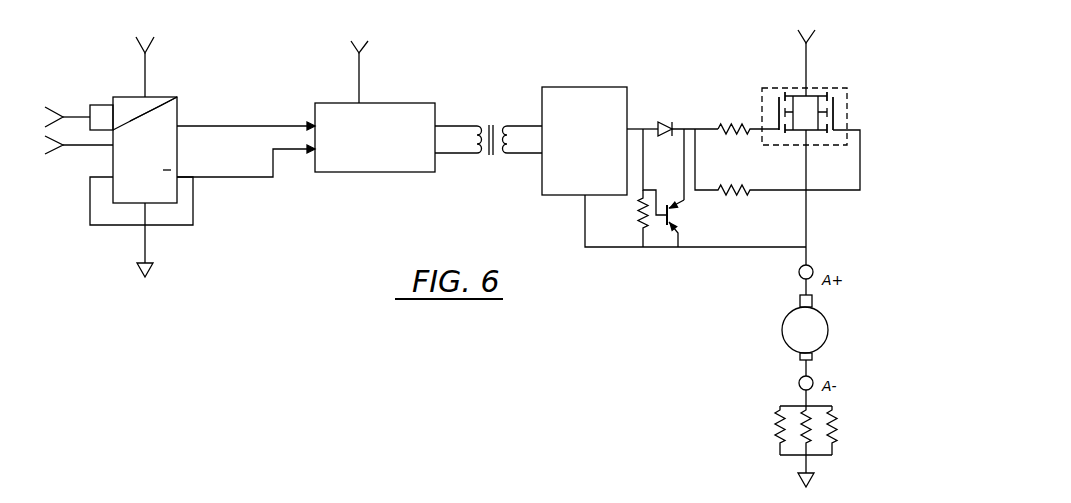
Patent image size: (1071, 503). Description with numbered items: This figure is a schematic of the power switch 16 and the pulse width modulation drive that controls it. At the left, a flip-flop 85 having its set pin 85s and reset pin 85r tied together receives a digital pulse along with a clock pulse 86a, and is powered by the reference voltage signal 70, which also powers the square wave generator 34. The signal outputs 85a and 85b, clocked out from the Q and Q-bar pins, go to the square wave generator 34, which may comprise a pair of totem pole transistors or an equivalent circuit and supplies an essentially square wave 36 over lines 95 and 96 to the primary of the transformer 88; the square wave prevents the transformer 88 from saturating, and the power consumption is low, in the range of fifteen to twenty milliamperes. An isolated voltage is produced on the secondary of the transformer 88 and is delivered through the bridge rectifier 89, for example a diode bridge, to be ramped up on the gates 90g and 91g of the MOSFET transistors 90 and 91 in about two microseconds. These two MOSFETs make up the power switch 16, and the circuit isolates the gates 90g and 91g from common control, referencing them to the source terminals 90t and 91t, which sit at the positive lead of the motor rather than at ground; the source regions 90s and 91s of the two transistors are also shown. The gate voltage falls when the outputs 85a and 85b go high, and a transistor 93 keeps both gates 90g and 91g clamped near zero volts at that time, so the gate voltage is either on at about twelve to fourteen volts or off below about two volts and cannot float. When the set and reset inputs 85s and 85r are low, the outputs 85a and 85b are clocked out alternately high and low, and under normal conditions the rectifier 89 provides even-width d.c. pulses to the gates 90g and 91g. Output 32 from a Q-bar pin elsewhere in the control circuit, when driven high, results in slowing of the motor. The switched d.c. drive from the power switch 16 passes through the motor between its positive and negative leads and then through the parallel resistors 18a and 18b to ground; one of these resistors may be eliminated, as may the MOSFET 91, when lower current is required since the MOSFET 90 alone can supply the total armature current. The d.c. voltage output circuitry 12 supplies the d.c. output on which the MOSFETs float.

The d.c. voltage output circuitry 12 is at (813, 43).
The power switch 16 is at (860, 150).
The resistor 18a is at (780, 422).
The resistor 18b is at (837, 423).
The output 32 is at (63, 113).
The square wave generator 34 is at (348, 173).
The square waves 36 is at (521, 125).
The reference voltage signal 70 is at (152, 50).
The flip-flop 85 is at (118, 96).
The set pin 85s is at (150, 97).
The reset pin 85r is at (177, 99).
The signal output 85a is at (265, 125).
The signal output 85b is at (230, 178).
The clock pulse 86a is at (68, 150).
The transformer 88 is at (489, 122).
The bridge rectifier 89 is at (565, 60).
The MOSFET transistor 90 is at (779, 109).
The gate 90g is at (779, 97).
The source of transistor 90 90s is at (786, 90).
The source terminal 90t is at (802, 132).
The MOSFET transistor 91 is at (834, 97).
The gate 91g is at (833, 118).
The source of transistor 91 91s is at (829, 88).
The source terminal 91t is at (812, 132).
The transistor 93 is at (673, 233).
The lines 95 is at (449, 123).
The transformer primary lead 96 is at (462, 155).